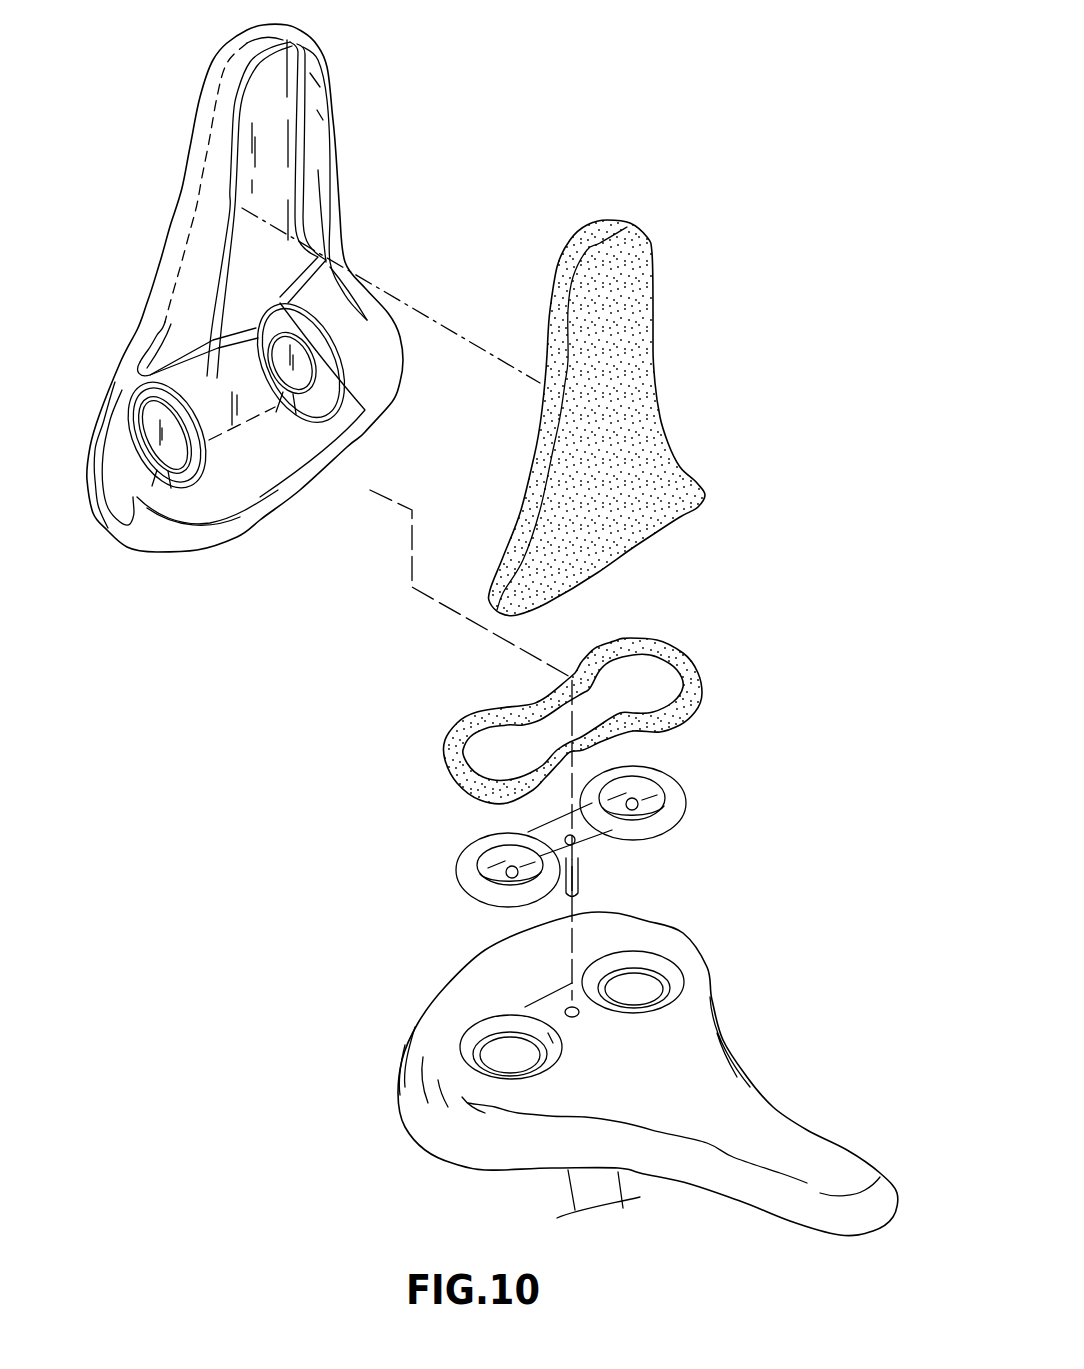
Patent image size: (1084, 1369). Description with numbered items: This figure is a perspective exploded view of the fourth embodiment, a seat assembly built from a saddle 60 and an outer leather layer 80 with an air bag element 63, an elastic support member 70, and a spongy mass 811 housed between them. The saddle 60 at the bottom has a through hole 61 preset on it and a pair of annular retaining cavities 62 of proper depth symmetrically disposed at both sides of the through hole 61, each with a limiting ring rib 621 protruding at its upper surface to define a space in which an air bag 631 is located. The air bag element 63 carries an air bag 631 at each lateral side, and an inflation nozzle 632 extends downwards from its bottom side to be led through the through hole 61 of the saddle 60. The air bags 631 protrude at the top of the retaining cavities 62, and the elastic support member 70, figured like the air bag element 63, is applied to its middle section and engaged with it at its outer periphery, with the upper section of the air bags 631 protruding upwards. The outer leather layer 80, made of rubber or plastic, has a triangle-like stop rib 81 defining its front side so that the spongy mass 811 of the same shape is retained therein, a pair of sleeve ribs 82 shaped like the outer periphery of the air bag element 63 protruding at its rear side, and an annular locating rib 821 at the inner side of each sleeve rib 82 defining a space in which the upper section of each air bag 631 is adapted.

The saddle 60 is at (755, 1034).
The through hole 61 is at (578, 1018).
The annular retaining cavity 62 is at (663, 968).
The limiting ring rib 621 is at (640, 963).
The air bag element 63 is at (687, 787).
The air bag 631 is at (687, 822).
The inflation nozzle 632 is at (582, 873).
The elastic support member 70 is at (700, 637).
The outer leather layer 80 is at (287, 523).
The stop rib 81 is at (313, 197).
The spongy mass 811 is at (655, 370).
The sleeve rib 82 is at (322, 392).
The annular locating rib 821 is at (314, 357).